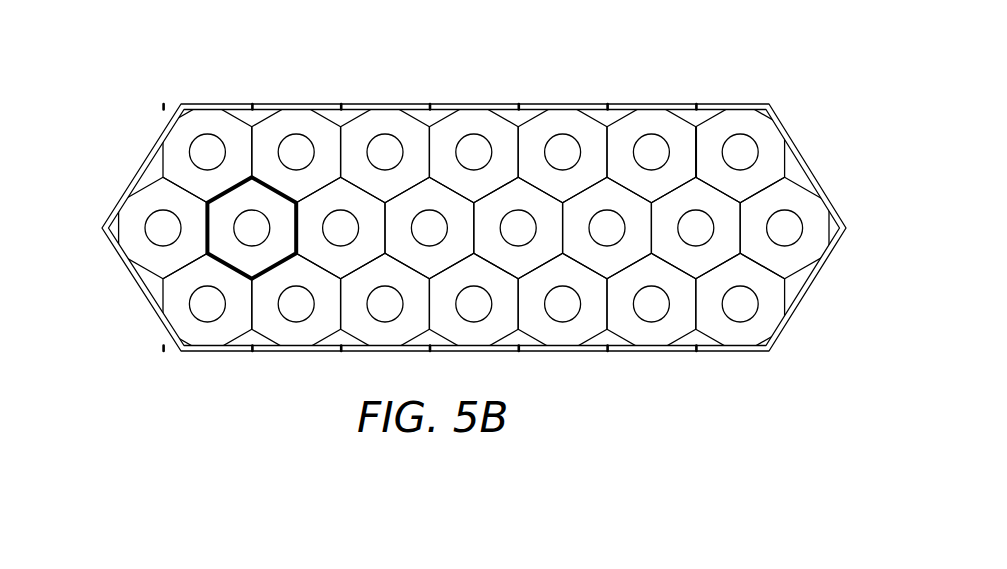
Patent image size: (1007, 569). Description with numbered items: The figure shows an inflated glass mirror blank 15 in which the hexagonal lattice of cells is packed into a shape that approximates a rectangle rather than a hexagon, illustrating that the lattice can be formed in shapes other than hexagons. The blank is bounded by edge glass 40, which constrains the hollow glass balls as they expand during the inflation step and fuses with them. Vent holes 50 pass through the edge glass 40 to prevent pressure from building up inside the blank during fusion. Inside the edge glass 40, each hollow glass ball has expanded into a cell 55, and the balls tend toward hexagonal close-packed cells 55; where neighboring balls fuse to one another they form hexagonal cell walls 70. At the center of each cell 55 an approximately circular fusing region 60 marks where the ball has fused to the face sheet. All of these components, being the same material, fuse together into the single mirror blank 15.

The inflated glass mirror blank 15 is at (120, 93).
The edge glass 40 is at (150, 157).
The vent holes 50 is at (606, 108).
The cell 55 is at (249, 176).
The fusing region 60 is at (657, 314).
The hexagonal cell wall 70 is at (696, 140).